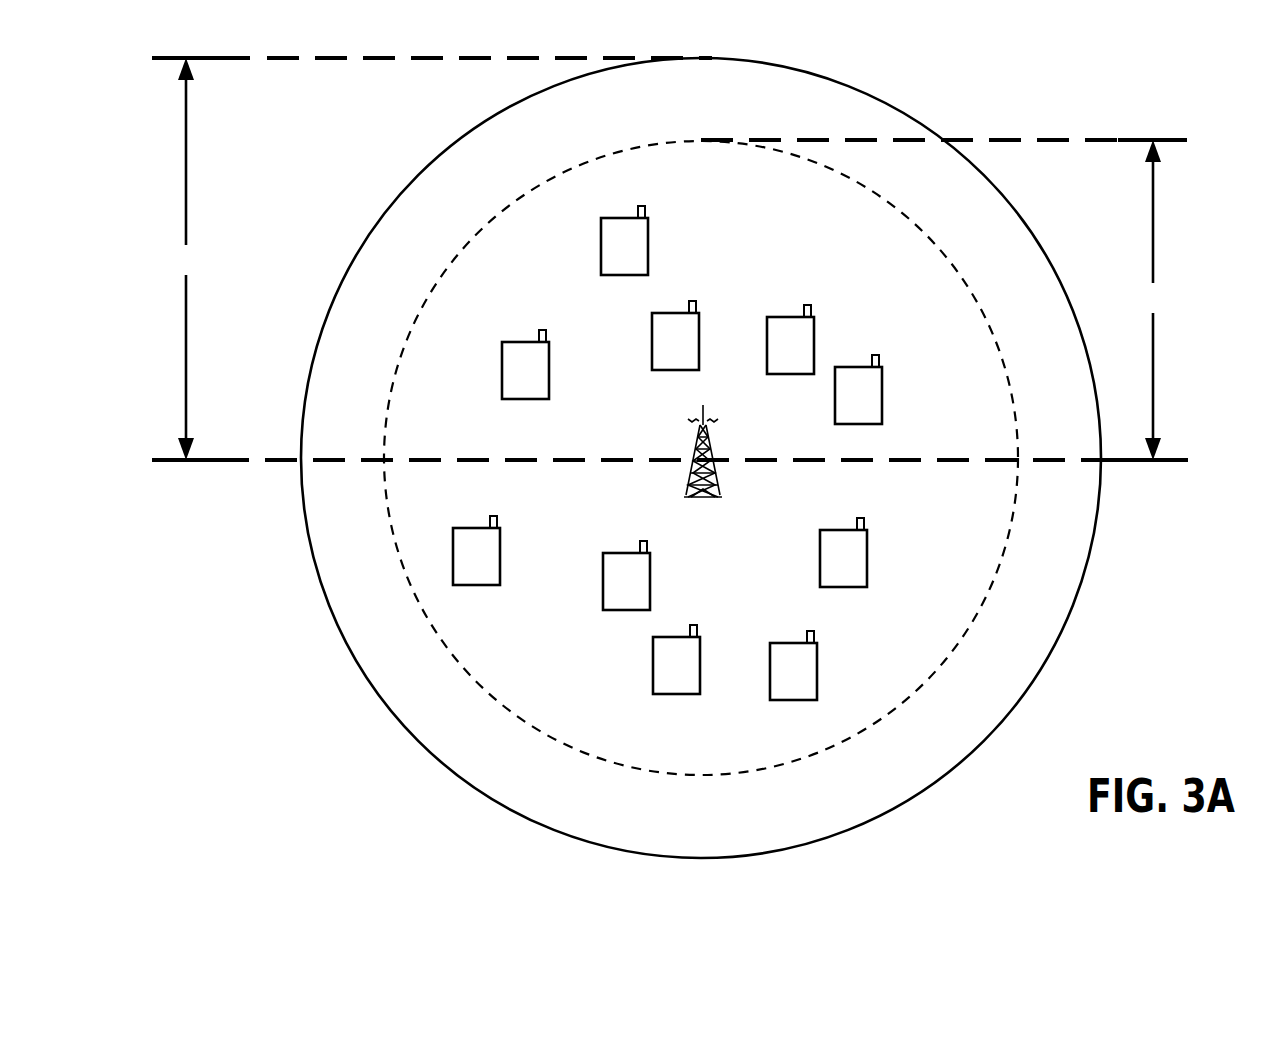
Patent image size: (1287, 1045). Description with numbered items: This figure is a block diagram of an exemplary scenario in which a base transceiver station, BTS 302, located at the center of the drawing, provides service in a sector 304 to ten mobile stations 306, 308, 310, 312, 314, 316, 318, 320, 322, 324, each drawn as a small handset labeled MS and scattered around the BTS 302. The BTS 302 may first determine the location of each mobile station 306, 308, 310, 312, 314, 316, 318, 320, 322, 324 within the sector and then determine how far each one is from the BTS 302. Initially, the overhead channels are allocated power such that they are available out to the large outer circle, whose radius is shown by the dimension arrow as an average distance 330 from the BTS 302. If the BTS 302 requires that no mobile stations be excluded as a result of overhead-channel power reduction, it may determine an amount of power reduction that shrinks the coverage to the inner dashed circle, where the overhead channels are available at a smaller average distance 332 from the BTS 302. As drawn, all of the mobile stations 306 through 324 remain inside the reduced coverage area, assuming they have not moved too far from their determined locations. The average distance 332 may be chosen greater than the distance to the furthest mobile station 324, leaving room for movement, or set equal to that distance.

The BTS 302 is at (698, 455).
The sector 304 is at (440, 158).
The mobile station 306 is at (551, 376).
The mobile station 308 is at (650, 252).
The mobile station 310 is at (816, 351).
The mobile station 312 is at (884, 401).
The mobile station 314 is at (701, 347).
The mobile station 316 is at (869, 564).
The mobile station 318 is at (819, 677).
The mobile station 320 is at (702, 671).
The mobile station 322 is at (652, 587).
The mobile station 324 is at (502, 562).
The average distance 330 is at (670, 259).
The average distance 332 is at (785, 457).